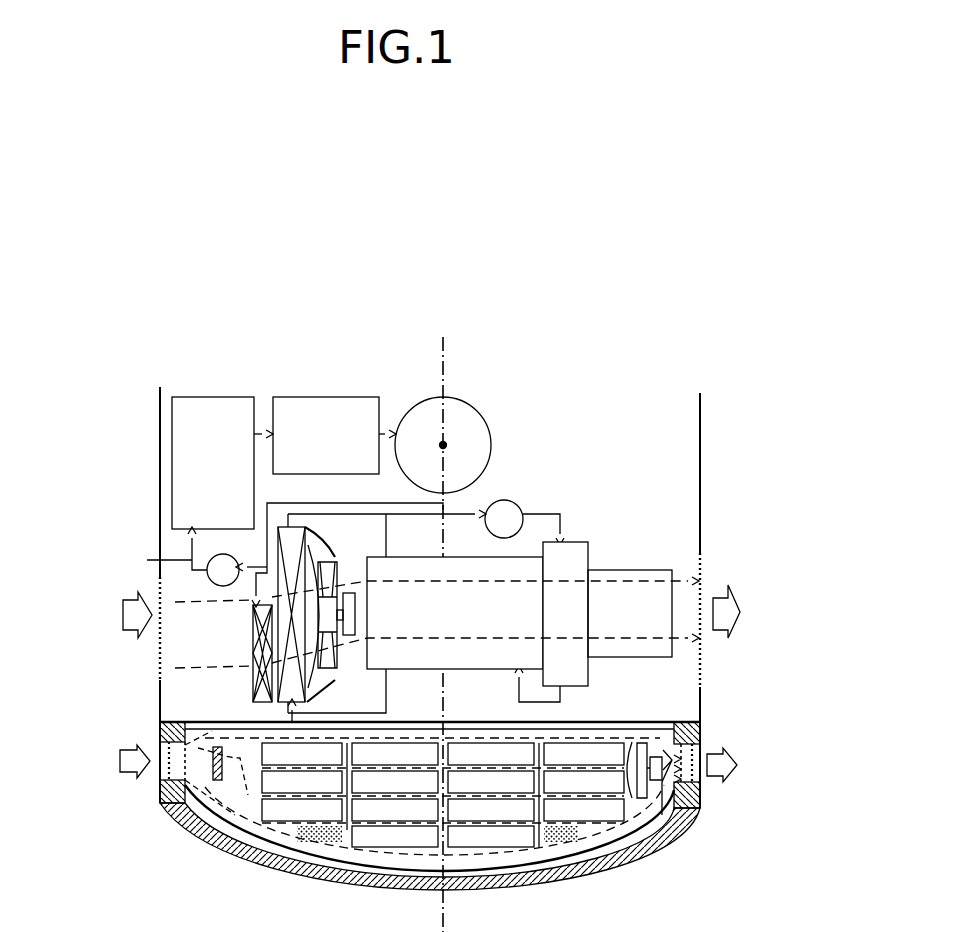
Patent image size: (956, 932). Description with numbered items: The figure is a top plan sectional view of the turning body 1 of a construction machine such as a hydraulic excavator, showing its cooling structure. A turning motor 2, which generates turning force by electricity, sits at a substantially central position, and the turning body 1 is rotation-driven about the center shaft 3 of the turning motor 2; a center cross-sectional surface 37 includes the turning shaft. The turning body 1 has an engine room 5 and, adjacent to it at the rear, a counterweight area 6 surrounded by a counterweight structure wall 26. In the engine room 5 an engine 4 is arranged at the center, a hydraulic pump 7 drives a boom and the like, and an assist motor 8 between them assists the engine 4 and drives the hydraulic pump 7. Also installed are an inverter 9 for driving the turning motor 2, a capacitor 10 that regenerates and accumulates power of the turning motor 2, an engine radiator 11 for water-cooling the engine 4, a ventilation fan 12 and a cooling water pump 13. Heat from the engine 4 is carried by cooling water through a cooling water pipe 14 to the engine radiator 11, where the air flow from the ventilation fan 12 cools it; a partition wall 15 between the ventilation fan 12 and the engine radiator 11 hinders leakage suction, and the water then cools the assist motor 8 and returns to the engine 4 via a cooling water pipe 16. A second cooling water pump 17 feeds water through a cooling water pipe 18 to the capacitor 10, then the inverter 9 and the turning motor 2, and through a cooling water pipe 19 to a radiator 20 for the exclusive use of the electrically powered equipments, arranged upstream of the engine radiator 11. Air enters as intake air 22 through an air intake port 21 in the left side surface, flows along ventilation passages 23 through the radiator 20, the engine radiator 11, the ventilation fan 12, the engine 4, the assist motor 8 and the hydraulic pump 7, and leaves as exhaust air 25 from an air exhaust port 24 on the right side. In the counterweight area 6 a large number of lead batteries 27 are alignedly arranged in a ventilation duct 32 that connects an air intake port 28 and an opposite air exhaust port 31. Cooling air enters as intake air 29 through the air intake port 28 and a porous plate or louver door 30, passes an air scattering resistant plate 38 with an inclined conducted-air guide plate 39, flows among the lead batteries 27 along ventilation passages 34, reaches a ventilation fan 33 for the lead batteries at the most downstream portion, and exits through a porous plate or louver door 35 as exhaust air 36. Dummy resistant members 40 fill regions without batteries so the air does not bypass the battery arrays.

The turning body 1 is at (158, 488).
The turning motor 2 is at (480, 434).
The center shaft 3 is at (443, 445).
The engine 4 is at (423, 662).
The engine room 5 is at (660, 537).
The counterweight area 6 is at (212, 846).
The hydraulic pump 7 is at (623, 647).
The assist motor 8 is at (571, 550).
The inverter 9 is at (312, 405).
The capacitor 10 is at (205, 403).
The engine radiator 11 is at (312, 550).
The ventilation fan 12 is at (330, 658).
The cooling water pump 13 is at (512, 505).
The cooling water pipe 14 is at (387, 683).
The partition wall 15 is at (348, 640).
The cooling water pipe 16 is at (562, 702).
The cooling water pump 17 is at (208, 582).
The cooling water pipe 18 is at (147, 560).
The cooling water pipe 19 is at (278, 503).
The radiator for the exclusive use of the electrically powered equipments 20 is at (248, 688).
The air intake port 21 is at (160, 643).
The intake air 22 is at (126, 612).
The ventilation passages 23 is at (232, 602).
The air exhaust port 24 is at (702, 648).
The exhaust air 25 is at (727, 617).
The counterweight structure wall 26 is at (232, 858).
The lead batteries 27 is at (352, 848).
The air intake port 28 is at (158, 767).
The intake air 29 is at (125, 776).
The porous plate or louver door 30 is at (160, 743).
The air exhaust port 31 is at (700, 780).
The ventilation duct 32 is at (272, 862).
The ventilation fan for the lead batteries 33 is at (672, 822).
The ventilation passages 34 is at (254, 760).
The porous plate or louver door 35 is at (706, 748).
The exhaust air 36 is at (738, 770).
The center cross-sectional surface 37 is at (445, 355).
The air scattering resistant plate 38 is at (163, 803).
The conducted-air guide plate 39 is at (197, 828).
The dummy resistant members 40 is at (307, 840).